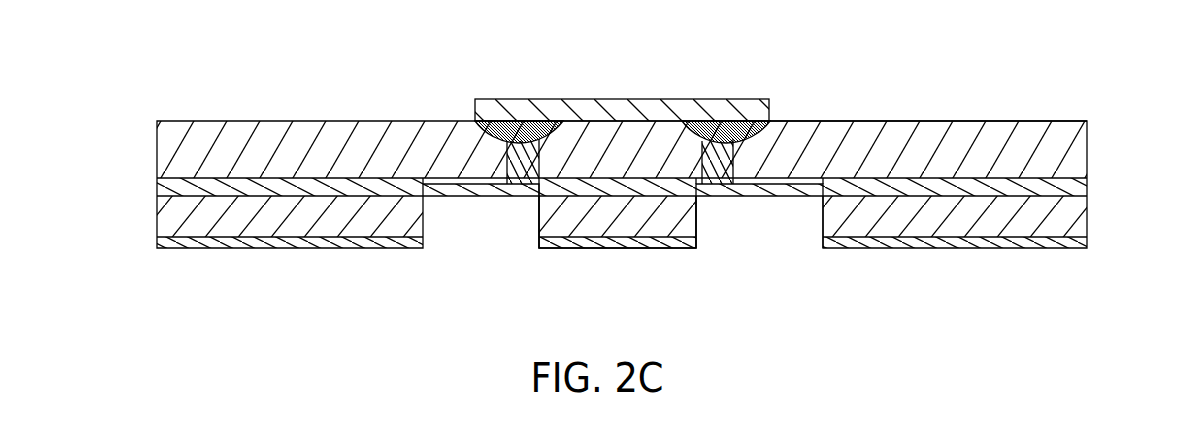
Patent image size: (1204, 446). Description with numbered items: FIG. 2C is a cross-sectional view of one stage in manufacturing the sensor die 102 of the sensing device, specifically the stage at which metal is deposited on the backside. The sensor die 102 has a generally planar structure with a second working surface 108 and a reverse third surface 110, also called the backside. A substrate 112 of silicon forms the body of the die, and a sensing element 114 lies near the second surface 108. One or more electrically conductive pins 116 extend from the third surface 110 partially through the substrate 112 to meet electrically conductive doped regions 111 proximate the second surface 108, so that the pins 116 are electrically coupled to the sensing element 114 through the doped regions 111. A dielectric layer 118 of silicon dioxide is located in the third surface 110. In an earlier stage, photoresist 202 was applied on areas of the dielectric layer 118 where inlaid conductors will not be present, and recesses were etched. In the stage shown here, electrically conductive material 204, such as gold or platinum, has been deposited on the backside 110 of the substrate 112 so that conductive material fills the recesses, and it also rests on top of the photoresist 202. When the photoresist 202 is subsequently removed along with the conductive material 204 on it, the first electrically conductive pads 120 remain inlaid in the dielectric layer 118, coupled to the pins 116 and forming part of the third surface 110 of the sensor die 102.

The sensor die 102 is at (1096, 155).
The second working surface 108 is at (823, 121).
The third surface 110 is at (573, 197).
The electrically conductive doped regions 111 is at (513, 128).
The substrate 112 is at (420, 140).
The sensing element 114 is at (616, 110).
The electrically conductive pins 116 is at (517, 166).
The dielectric layer 118 is at (315, 188).
The first electrically conductive pads 120 is at (778, 197).
The photoresist 202 is at (281, 229).
The electrically conductive material 204 is at (374, 243).